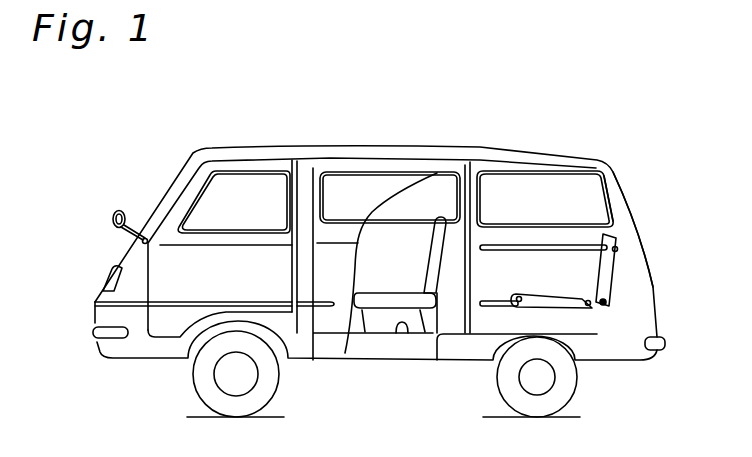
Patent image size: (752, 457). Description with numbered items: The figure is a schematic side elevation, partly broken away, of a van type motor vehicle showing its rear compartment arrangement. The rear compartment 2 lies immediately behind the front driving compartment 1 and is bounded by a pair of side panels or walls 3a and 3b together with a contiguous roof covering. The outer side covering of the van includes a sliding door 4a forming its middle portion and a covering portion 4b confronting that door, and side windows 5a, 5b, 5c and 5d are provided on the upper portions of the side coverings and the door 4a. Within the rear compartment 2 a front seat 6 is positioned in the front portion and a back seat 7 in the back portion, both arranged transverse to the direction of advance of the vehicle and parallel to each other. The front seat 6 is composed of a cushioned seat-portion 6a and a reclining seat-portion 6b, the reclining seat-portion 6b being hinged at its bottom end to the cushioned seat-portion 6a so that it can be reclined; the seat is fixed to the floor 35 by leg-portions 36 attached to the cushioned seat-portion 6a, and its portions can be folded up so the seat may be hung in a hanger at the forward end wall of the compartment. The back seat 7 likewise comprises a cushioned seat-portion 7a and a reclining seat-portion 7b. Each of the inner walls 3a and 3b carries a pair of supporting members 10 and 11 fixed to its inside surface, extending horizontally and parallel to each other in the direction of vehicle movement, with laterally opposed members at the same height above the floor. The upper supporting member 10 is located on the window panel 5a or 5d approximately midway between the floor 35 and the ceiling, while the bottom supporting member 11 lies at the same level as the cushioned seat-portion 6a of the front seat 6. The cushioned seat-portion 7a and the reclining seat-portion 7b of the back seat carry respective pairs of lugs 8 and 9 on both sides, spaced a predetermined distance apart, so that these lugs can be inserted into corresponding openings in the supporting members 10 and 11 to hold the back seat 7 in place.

The front driving compartment 1 is at (243, 187).
The rear compartment 2 is at (478, 283).
The side panel 3a is at (472, 247).
The side panel 3b is at (617, 227).
The sliding door 4a is at (407, 233).
The covering portion 4b is at (332, 283).
The side window 5a is at (437, 183).
The side window 5b is at (563, 190).
The side window 5c is at (350, 190).
The side window 5d is at (603, 207).
The front seat 6 is at (381, 316).
The cushioned seat-portion 6a is at (405, 298).
The reclining seat-portion 6b is at (435, 260).
The back seat 7 is at (571, 314).
The cushioned seat-portion 7a is at (541, 297).
The reclining seat-portion 7b is at (611, 266).
The lug 8 is at (521, 302).
The lug 9 is at (619, 247).
The upper supporting member 10 is at (517, 245).
The bottom supporting member 11 is at (495, 306).
The floor 35 is at (403, 327).
The leg-portion 36 is at (345, 353).